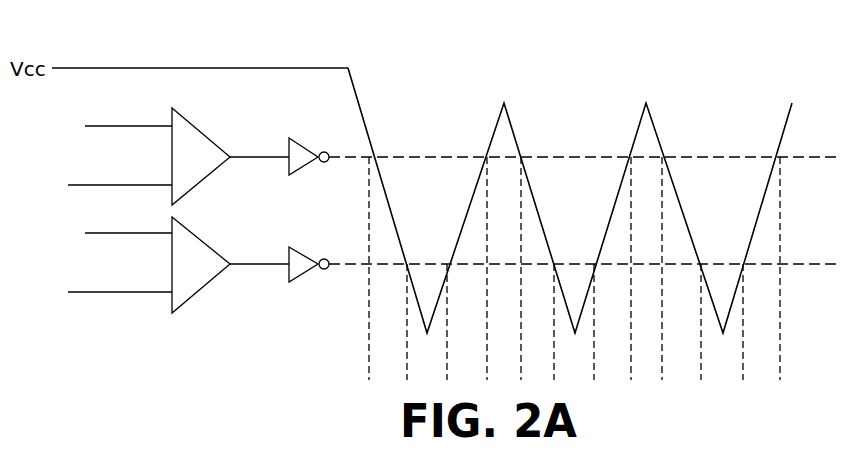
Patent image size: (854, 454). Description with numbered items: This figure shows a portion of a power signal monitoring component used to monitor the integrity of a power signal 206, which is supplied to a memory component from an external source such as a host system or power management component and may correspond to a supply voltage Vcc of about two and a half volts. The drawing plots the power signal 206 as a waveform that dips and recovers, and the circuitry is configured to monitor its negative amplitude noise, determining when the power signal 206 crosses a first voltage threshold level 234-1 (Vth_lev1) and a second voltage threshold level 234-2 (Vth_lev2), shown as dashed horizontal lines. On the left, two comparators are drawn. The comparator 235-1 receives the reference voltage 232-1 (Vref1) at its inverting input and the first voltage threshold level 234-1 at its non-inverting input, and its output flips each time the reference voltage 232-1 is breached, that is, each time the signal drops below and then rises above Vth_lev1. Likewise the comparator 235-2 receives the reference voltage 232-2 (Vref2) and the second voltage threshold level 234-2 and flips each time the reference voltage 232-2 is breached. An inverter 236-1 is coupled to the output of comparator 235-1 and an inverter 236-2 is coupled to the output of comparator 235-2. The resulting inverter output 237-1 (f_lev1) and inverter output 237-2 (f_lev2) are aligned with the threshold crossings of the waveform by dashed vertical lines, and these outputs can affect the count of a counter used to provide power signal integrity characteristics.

The power signal 206 is at (141, 67).
The reference voltage 232-1 is at (105, 127).
The first voltage threshold level 234-1 is at (112, 186).
The comparator 235-1 is at (198, 130).
The inverter 236-1 is at (309, 140).
The inverter output 237-1 is at (330, 160).
The reference voltage 232-2 is at (105, 234).
The second voltage threshold level 234-2 is at (112, 293).
The comparator 235-2 is at (198, 238).
The inverter 236-2 is at (309, 249).
The inverter output 237-2 is at (330, 267).